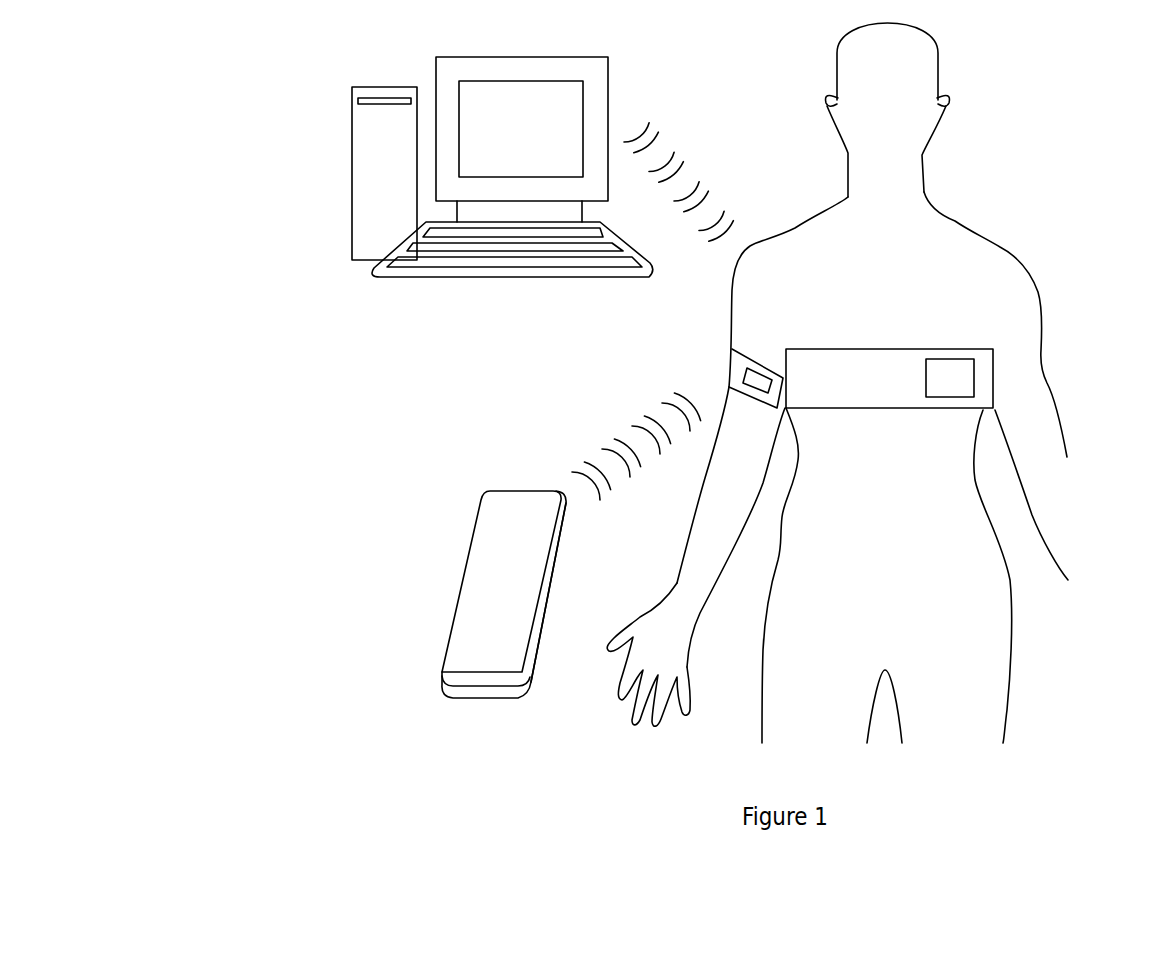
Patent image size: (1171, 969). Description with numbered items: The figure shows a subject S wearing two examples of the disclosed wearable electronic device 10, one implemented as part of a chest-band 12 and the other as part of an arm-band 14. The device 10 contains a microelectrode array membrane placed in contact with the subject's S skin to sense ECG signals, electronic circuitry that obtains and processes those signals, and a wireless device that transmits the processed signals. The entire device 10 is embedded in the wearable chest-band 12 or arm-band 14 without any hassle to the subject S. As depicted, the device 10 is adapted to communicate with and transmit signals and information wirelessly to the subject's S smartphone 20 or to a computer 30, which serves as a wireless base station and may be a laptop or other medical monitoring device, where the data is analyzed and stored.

The subject S is at (977, 232).
The device 10 is at (776, 379).
The chest-band 12 is at (987, 367).
The arm-band 14 is at (742, 368).
The smartphone 20 is at (473, 550).
The wireless base station 30 is at (352, 190).